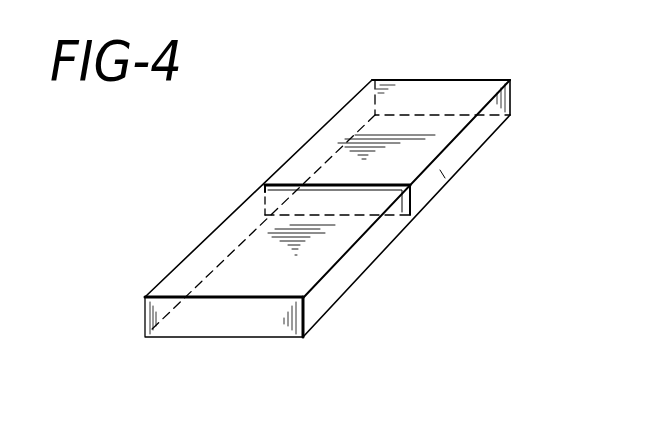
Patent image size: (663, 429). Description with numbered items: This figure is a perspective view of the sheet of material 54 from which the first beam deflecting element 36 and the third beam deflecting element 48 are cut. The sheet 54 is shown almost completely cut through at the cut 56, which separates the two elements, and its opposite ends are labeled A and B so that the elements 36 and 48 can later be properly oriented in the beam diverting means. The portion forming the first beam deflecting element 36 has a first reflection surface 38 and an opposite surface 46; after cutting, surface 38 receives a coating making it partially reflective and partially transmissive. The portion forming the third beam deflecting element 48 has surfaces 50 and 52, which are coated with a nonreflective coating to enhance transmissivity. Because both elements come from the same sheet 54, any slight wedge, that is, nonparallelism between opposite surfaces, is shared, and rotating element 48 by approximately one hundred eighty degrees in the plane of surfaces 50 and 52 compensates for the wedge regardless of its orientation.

The first beam deflecting element 36 is at (355, 265).
The first reflection surface 38 is at (192, 323).
The surface 46 is at (210, 258).
The third beam deflecting element 48 is at (472, 137).
The surface 50 is at (438, 170).
The surface 52 is at (350, 127).
The sheet of material 54 is at (447, 213).
The cut 56 is at (263, 187).